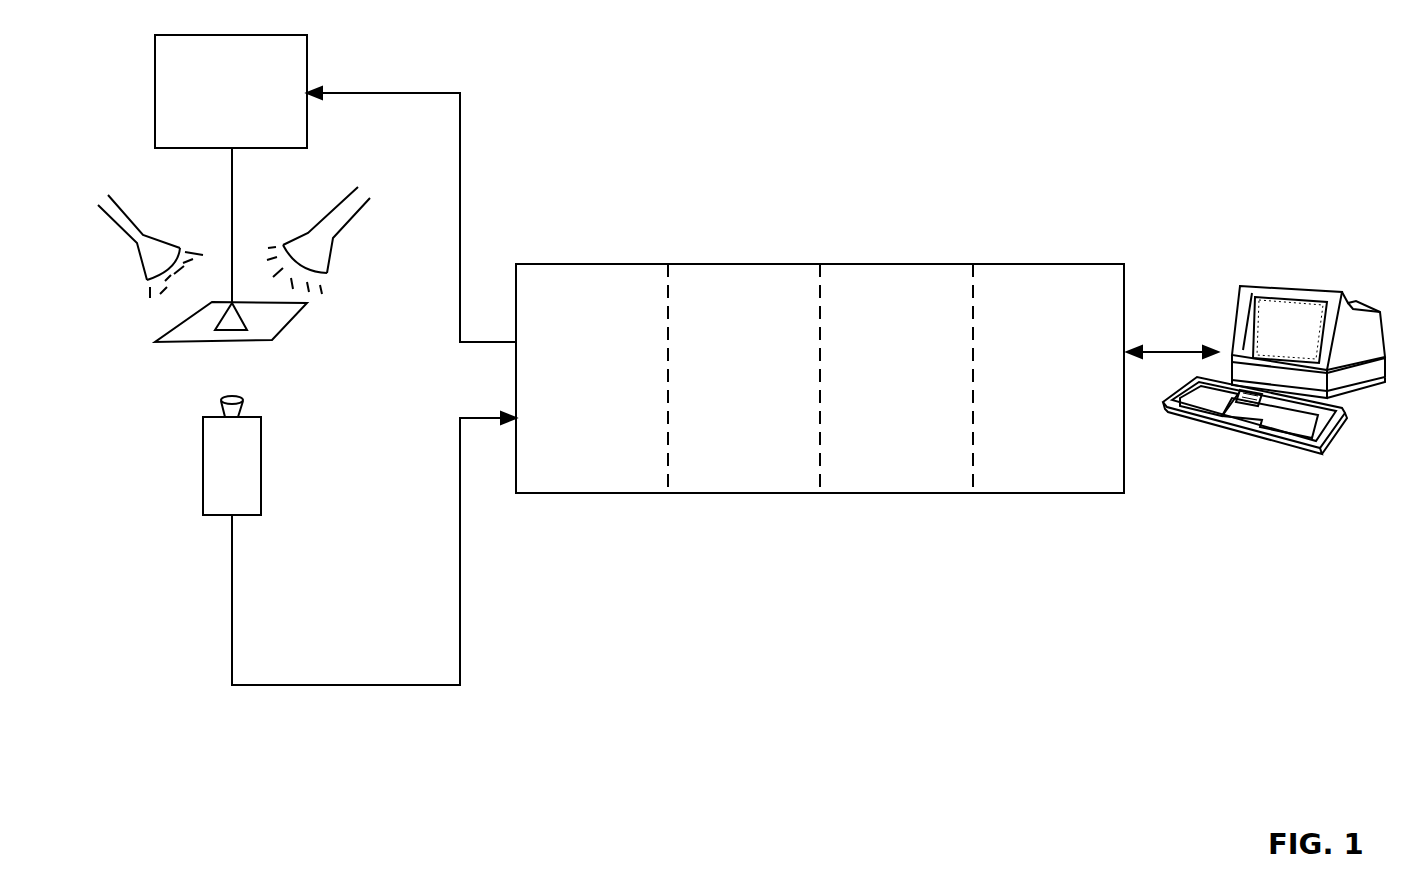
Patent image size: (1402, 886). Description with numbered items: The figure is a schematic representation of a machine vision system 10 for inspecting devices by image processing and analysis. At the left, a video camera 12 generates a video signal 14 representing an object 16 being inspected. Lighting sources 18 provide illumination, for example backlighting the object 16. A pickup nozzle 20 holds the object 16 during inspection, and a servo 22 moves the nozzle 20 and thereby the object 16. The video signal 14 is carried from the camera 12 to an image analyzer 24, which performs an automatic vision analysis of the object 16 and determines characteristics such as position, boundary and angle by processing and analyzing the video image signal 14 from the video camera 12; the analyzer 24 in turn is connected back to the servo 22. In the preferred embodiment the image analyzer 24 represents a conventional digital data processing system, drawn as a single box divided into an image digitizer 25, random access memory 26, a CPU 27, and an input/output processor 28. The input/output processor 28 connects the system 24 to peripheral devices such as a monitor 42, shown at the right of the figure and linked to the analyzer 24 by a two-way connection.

The machine vision system 10 is at (715, 707).
The video camera 12 is at (259, 474).
The video signal 14 is at (385, 685).
The object 16 is at (277, 331).
The lighting sources 18 is at (160, 237).
The pickup nozzle 20 is at (218, 323).
The servo 22 is at (308, 63).
The image analyzer 24 is at (1029, 493).
The image digitizer 25 is at (598, 391).
The random access memory 26 is at (751, 391).
The CPU 27 is at (911, 391).
The input/output processor 28 is at (1056, 391).
The monitor 42 is at (1296, 315).